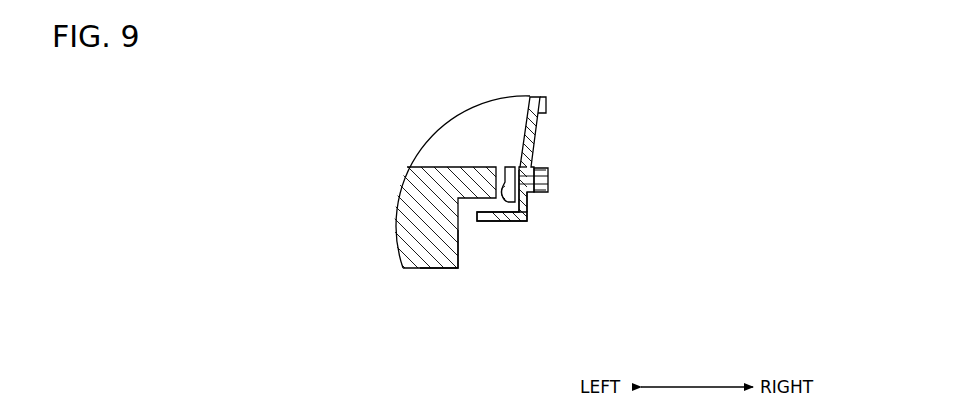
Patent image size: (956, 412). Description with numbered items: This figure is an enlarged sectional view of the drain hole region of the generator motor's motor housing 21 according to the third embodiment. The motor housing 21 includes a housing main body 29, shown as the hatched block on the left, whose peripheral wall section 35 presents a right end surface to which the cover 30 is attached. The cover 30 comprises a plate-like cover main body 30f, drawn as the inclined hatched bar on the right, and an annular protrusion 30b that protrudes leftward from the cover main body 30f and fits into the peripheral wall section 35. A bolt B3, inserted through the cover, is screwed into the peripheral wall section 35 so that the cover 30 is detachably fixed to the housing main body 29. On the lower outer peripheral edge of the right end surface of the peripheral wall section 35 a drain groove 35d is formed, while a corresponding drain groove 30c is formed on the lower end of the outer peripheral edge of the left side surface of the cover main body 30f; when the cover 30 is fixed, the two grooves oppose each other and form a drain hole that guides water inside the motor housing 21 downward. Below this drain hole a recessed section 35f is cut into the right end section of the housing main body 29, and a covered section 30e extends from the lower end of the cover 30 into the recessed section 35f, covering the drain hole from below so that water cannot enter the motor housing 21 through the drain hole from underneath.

The motor housing 21 is at (372, 272).
The housing main body 29 is at (465, 218).
The peripheral wall section 35 is at (403, 200).
The drain groove 35d is at (507, 172).
The recessed section 35f is at (464, 240).
The cover 30 is at (540, 174).
The cover main body 30f is at (533, 128).
The annular protrusion 30b is at (517, 165).
The drain groove 30c is at (528, 196).
The covered section 30e is at (504, 222).
The bolt B3 is at (548, 181).